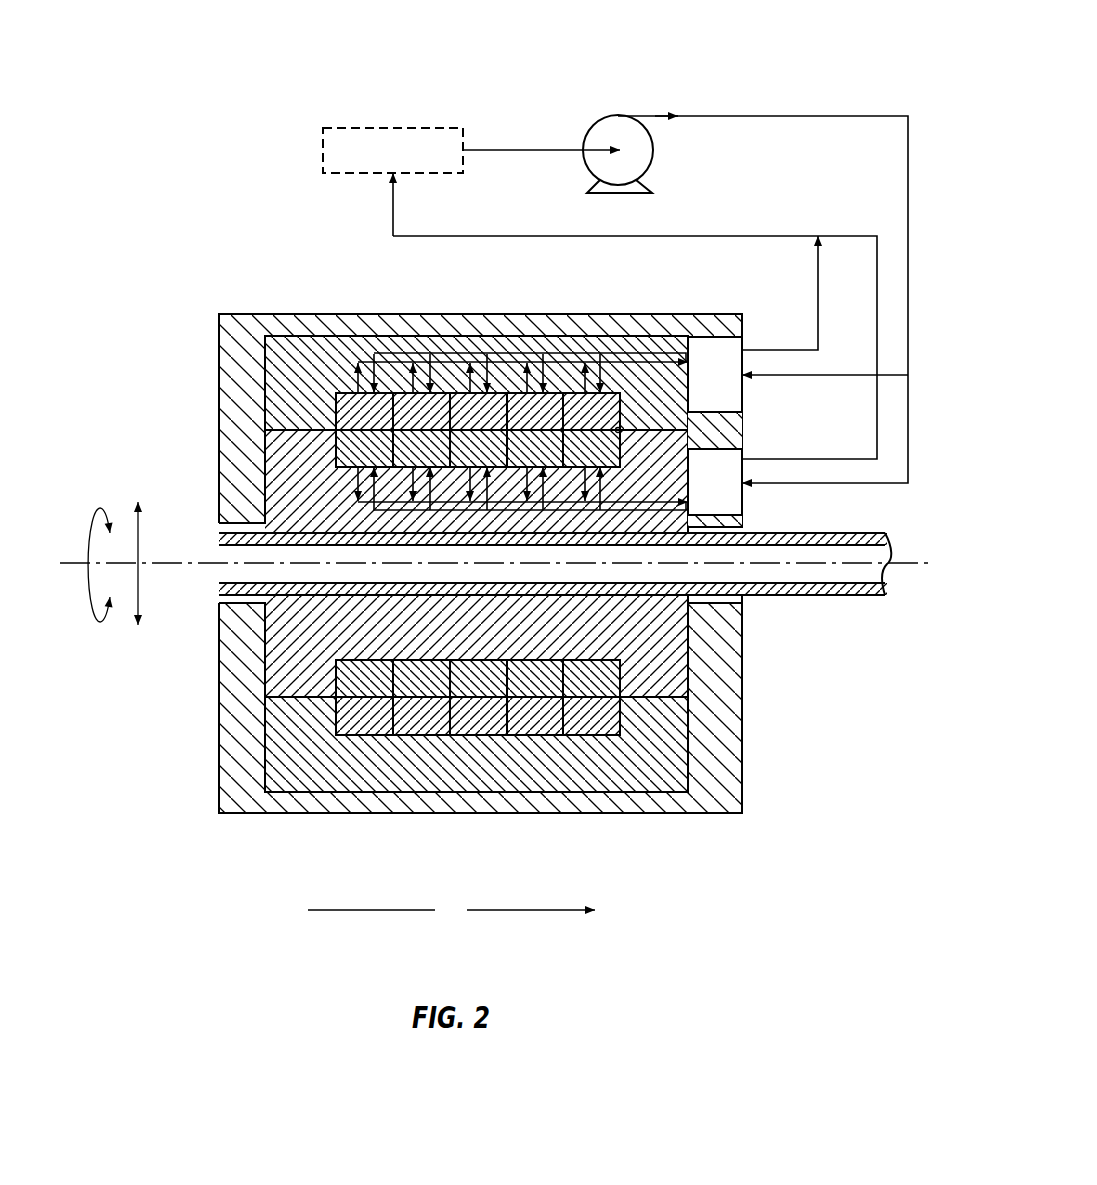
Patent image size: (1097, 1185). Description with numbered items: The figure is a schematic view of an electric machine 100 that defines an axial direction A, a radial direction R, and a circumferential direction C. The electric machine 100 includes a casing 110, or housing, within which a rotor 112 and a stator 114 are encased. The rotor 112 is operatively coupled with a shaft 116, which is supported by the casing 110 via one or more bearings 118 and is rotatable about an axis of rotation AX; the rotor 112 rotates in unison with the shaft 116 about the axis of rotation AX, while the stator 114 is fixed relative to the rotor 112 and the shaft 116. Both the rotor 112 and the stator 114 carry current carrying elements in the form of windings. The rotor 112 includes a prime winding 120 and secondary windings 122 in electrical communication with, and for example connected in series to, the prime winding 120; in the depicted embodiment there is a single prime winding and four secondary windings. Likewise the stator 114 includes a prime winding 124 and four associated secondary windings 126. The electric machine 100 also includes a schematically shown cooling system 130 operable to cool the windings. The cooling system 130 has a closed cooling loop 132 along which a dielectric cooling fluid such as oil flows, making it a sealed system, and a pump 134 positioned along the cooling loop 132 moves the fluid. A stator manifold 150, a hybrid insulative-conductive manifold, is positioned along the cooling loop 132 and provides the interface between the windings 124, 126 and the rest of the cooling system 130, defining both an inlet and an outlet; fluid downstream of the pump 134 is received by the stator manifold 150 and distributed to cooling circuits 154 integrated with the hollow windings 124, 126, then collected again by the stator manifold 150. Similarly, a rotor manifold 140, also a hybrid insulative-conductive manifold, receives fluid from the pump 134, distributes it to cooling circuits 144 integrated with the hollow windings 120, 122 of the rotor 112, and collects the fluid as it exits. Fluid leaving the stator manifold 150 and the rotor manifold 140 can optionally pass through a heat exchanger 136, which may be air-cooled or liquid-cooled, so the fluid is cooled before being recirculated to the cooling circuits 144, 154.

The electric machine 100 is at (228, 252).
The casing 110 is at (717, 742).
The rotor 112 is at (659, 653).
The stator 114 is at (650, 780).
The shaft 116 is at (820, 595).
The bearings 118 is at (732, 607).
The prime winding 120 is at (493, 660).
The secondary windings 122 is at (405, 660).
The prime winding 124 is at (485, 735).
The secondary windings 126 is at (418, 735).
The cooling system 130 is at (463, 92).
The cooling loop 132 is at (787, 115).
The pump 134 is at (587, 135).
The heat exchanger 136 is at (411, 167).
The rotor manifold 140 is at (734, 492).
The cooling circuits 144 is at (318, 488).
The stator manifold 150 is at (734, 388).
The cooling circuits 154 is at (318, 376).
The axial direction A is at (451, 910).
The radial direction R is at (139, 582).
The circumferential direction C is at (92, 563).
The axis of rotation AX is at (203, 565).